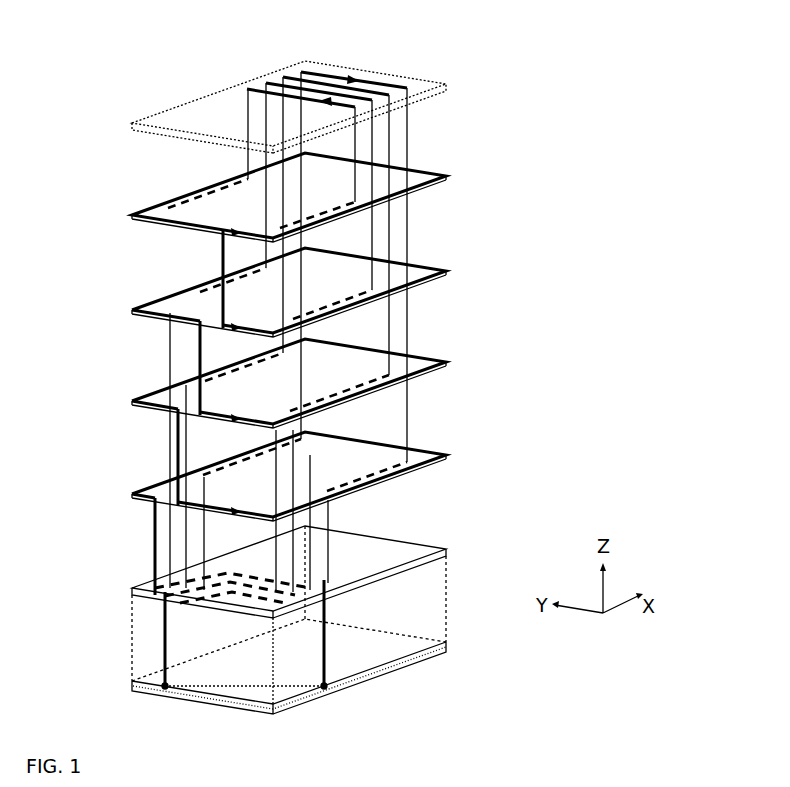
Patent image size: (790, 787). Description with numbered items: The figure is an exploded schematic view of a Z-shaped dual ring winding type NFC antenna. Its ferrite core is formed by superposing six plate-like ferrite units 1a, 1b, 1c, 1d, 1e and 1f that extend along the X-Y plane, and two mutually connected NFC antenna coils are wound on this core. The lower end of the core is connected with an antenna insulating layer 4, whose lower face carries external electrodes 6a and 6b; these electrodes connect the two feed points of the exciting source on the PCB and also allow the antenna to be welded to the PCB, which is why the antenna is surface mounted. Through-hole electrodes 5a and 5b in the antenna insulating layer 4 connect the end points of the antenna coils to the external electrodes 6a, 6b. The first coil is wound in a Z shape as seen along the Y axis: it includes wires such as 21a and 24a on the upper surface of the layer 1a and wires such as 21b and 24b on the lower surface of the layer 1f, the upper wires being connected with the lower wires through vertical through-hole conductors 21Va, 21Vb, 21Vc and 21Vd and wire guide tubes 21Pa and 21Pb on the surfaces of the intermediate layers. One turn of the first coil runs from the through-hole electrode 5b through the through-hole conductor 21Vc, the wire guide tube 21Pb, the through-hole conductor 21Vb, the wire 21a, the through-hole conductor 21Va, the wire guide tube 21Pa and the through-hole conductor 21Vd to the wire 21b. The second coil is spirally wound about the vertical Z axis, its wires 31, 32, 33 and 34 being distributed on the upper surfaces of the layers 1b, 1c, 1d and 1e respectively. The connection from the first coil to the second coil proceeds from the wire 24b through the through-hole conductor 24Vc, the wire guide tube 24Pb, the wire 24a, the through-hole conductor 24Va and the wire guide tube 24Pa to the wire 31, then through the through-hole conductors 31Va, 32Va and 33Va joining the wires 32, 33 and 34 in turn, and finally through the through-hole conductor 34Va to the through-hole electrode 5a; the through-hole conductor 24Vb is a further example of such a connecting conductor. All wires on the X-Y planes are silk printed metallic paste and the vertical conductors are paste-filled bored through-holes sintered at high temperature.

The plate-like ferrite unit 1a is at (447, 83).
The plate-like ferrite unit 1b is at (448, 176).
The plate-like ferrite unit 1c is at (448, 270).
The plate-like ferrite unit 1d is at (448, 361).
The plate-like ferrite unit 1e is at (448, 455).
The plate-like ferrite unit 1f is at (448, 551).
The antenna insulating layer 4 is at (448, 644).
The through-hole electrode 5a is at (165, 690).
The through-hole electrode 5b is at (325, 684).
The external electrode 6a is at (242, 703).
The external electrode 6b is at (283, 682).
The wire 21a is at (301, 70).
The wire 21b is at (226, 575).
The through-hole conductor 21Va is at (302, 372).
The through-hole conductor 21Vb is at (408, 423).
The through-hole conductor 21Vc is at (328, 553).
The through-hole conductor 21Vd is at (204, 550).
The wire guide tube 21Pa is at (238, 457).
The wire guide tube 21Pb is at (350, 483).
The wire 24a is at (248, 88).
The wire 24b is at (217, 615).
The through-hole conductor 24Va is at (247, 127).
The through-hole conductor 24Vb is at (357, 150).
The through-hole conductor 24Vc is at (276, 414).
The wire guide tube 24Pa is at (208, 190).
The wire guide tube 24Pb is at (340, 212).
The wire of the second coil 31 is at (134, 216).
The through-hole conductor 31Va is at (222, 270).
The wire of the second coil 32 is at (134, 311).
The through-hole conductor 32Va is at (200, 365).
The wire of the second coil 33 is at (134, 401).
The through-hole conductor 33Va is at (180, 456).
The wire of the second coil 34 is at (134, 495).
The through-hole conductor 34Va is at (155, 552).